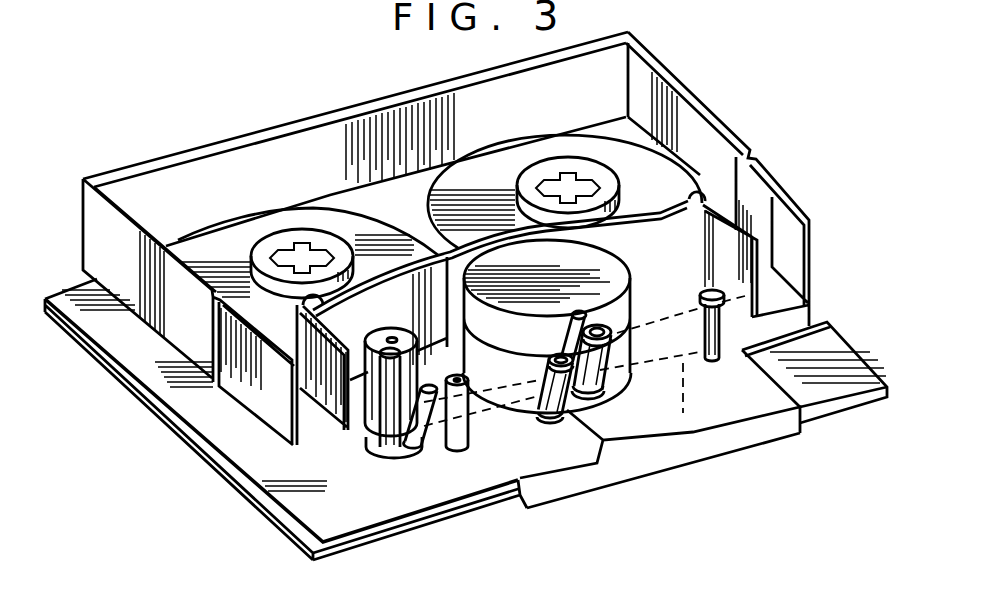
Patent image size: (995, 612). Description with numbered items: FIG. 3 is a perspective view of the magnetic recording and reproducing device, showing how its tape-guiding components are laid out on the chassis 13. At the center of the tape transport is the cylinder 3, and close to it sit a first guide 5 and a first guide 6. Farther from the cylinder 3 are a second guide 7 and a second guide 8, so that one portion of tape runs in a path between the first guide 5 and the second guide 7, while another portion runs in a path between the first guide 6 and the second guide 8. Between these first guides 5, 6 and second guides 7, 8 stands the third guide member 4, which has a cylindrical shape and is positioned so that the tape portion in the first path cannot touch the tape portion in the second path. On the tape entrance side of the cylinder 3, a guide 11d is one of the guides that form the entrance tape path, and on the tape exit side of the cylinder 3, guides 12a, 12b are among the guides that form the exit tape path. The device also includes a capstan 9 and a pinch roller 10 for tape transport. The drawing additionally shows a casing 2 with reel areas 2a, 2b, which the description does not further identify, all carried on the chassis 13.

The cassette casing half 2 is at (337, 128).
The reel hub 2a is at (652, 165).
The reel hub 2b is at (238, 229).
The cylinder 3 is at (612, 270).
The third guide member 4 is at (588, 394).
The first guide 5 is at (618, 338).
The first guide 6 is at (548, 363).
The second guide 7 is at (613, 378).
The second guide 8 is at (550, 420).
The capstan 9 is at (368, 448).
The pinch roller 10 is at (366, 428).
The guide 11d is at (712, 362).
The guide 12a is at (458, 448).
The guide 12b is at (411, 448).
The chassis 13 is at (153, 375).